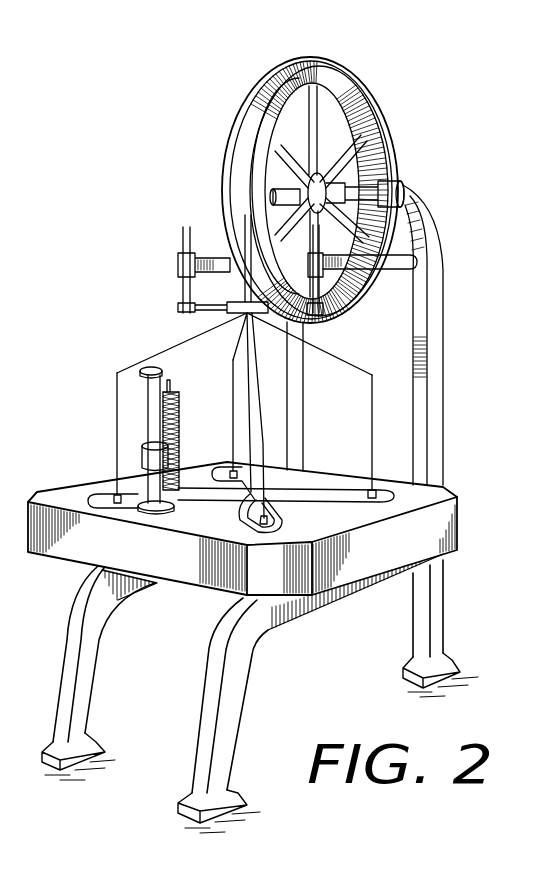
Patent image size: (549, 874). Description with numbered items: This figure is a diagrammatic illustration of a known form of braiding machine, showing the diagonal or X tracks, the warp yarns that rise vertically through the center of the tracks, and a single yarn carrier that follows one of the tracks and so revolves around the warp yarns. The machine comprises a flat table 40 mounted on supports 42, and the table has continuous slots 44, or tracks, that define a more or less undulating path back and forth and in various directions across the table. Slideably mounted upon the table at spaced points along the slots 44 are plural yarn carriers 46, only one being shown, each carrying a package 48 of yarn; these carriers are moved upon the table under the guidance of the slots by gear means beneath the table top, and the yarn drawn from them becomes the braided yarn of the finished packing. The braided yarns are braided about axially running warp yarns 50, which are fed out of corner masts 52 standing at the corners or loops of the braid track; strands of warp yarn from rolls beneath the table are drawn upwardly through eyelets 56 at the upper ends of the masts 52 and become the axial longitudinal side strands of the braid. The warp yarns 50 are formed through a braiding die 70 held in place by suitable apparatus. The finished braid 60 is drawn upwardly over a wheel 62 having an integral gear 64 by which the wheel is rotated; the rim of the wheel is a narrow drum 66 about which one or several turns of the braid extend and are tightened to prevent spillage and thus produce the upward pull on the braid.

The flat table 40 is at (448, 520).
The supports 42 is at (85, 666).
The continuous slots 44 is at (112, 492).
The yarn carrier 46 is at (165, 372).
The package of yarn 48 is at (179, 425).
The warp yarns 50 is at (357, 348).
The corner masts 52 is at (115, 412).
The eyelets 56 is at (115, 378).
The finished braid 60 is at (259, 76).
The wheel 62 is at (396, 131).
The integral gear 64 is at (233, 127).
The narrow drum 66 is at (348, 108).
The braiding die 70 is at (232, 302).